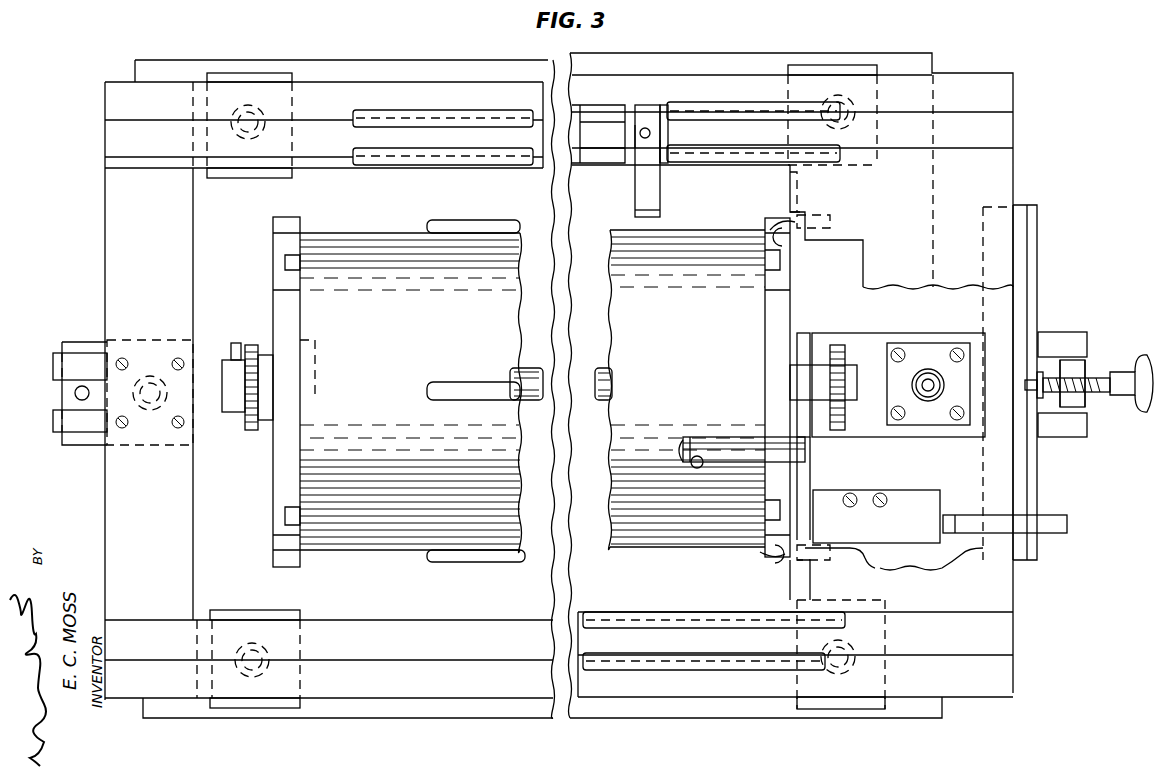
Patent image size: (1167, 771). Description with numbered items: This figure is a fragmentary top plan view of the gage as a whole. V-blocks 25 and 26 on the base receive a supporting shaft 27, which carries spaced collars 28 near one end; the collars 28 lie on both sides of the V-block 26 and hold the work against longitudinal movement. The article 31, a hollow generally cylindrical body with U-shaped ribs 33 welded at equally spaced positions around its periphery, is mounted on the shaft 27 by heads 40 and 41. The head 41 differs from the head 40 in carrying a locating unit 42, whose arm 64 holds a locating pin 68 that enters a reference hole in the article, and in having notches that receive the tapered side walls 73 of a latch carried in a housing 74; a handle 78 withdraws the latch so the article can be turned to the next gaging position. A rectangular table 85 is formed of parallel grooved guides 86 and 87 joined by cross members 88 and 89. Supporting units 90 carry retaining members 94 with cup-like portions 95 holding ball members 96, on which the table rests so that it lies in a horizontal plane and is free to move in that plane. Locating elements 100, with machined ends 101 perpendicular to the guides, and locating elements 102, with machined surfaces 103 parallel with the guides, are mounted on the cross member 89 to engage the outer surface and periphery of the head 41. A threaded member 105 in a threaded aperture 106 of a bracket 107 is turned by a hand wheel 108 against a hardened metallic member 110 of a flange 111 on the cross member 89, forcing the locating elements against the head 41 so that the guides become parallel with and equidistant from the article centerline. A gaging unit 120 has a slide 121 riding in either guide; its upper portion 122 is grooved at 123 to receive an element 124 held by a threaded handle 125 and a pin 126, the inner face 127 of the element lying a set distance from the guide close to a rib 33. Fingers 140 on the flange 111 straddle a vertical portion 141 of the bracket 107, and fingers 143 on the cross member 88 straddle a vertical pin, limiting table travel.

The V-block 25 is at (236, 343).
The V-block 26 is at (818, 434).
The supporting shaft 27 is at (230, 400).
The collars 28 is at (822, 345).
The article 31 is at (373, 245).
The ribs 33 is at (482, 224).
The head 40 is at (303, 327).
The head 41 is at (762, 323).
The locating unit 42 is at (719, 437).
The arm 64 is at (712, 452).
The locating pin 68 is at (690, 455).
The side walls of the latch leading end 73 is at (802, 500).
The housing 74 is at (911, 490).
The handle 78 is at (1065, 525).
The table 85 is at (1022, 152).
The grooved guide 86 is at (1015, 636).
The grooved guide 87 is at (107, 141).
The cross member 88 is at (107, 217).
The cross member 89 is at (1012, 195).
The supporting units 90 is at (262, 180).
The retaining members 94 is at (240, 114).
The cup-like portions 95 is at (926, 370).
The ball members 96 is at (252, 117).
The locating elements 100 is at (800, 215).
The machined ends 101 is at (790, 240).
The locating elements 102 is at (795, 214).
The machined surfaces 103 is at (790, 226).
The threaded member 105 is at (1100, 377).
The threaded aperture 106 is at (1082, 406).
The bracket 107 is at (1055, 420).
The hand wheel 108 is at (1142, 410).
The hardened metallic member 110 is at (1038, 398).
The flange 111 is at (1035, 312).
The gaging unit 120 is at (612, 100).
The slide 121 is at (678, 134).
The upper portion of the slide 122 is at (662, 166).
The groove 123 is at (664, 110).
The element 124 is at (655, 200).
The threaded handle 125 is at (640, 150).
The pin 126 is at (645, 127).
The inner end or face 127 is at (634, 214).
The fingers 140 is at (1065, 340).
The vertical portion 141 is at (75, 393).
The fingers 143 is at (57, 364).